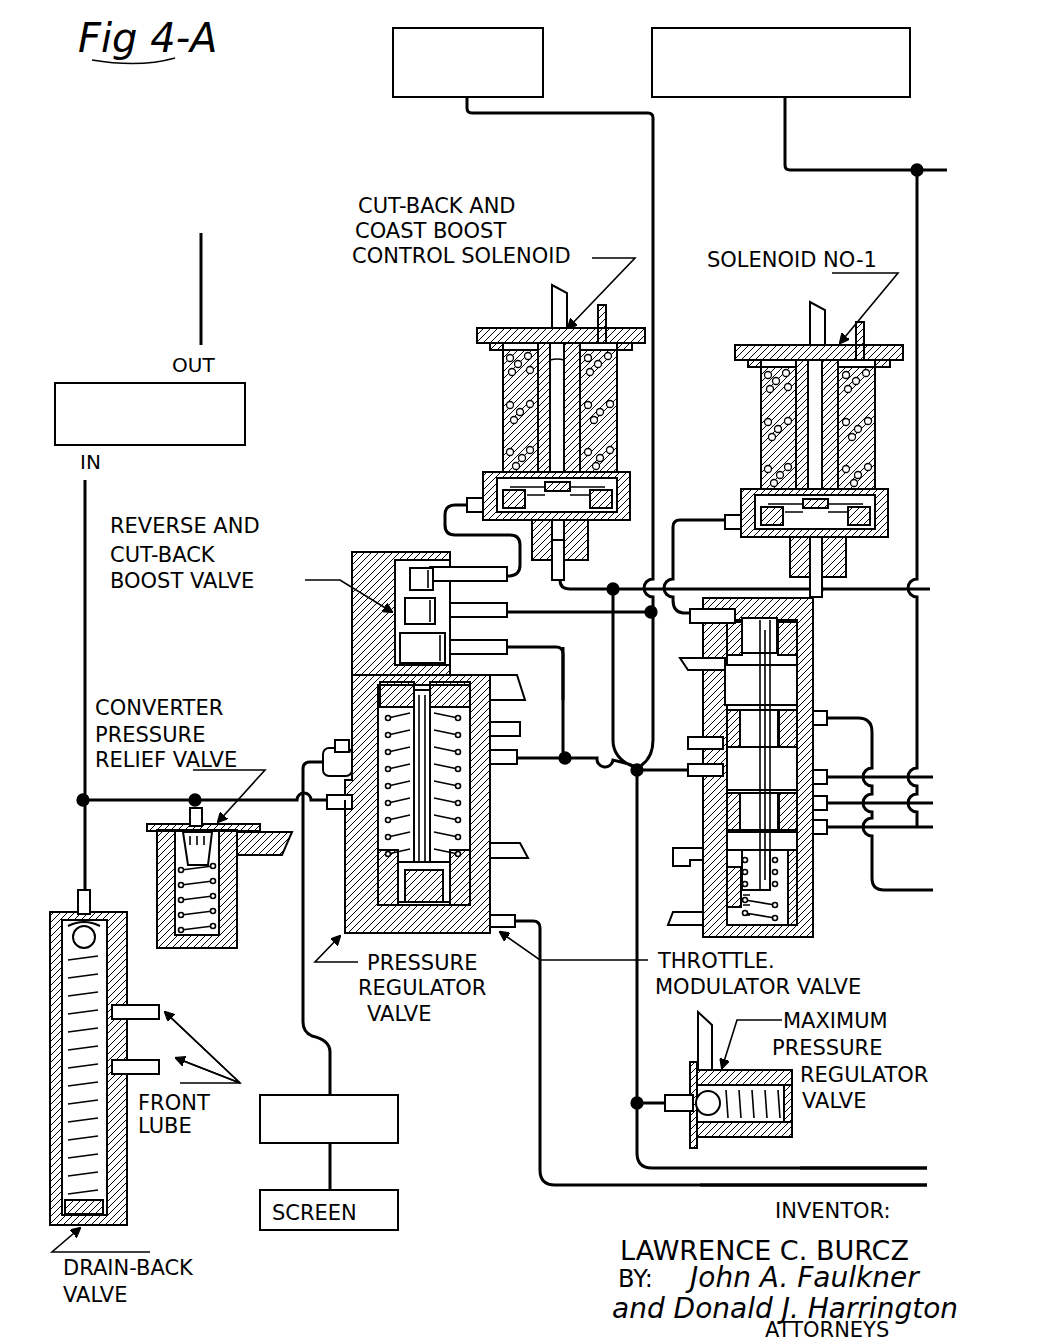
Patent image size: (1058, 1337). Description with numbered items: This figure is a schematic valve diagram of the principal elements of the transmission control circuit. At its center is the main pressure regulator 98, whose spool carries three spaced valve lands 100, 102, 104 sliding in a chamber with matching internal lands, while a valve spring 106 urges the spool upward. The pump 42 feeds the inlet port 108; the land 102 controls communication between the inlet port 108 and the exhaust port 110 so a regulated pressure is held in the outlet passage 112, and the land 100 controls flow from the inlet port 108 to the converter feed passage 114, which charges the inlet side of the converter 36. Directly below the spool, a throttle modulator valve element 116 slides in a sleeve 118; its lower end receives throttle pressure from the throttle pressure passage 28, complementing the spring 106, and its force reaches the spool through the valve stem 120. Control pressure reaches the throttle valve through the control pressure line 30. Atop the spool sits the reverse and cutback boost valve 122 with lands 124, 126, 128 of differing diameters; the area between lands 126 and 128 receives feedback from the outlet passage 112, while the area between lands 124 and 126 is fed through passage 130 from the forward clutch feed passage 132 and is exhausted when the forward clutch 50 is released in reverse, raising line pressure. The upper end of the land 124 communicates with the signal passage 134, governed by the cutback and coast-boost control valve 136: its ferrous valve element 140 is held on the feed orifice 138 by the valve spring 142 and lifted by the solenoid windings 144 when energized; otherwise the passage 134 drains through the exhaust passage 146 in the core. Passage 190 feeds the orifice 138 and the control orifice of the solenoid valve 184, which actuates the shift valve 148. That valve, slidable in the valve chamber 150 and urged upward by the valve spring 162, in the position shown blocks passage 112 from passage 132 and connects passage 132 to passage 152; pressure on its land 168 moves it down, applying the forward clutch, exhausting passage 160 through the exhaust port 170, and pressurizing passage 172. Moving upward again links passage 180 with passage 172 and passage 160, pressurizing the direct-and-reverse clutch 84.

The throttle pressure passage 28 is at (827, 1182).
The control pressure line 30 is at (905, 1168).
The converter 36 is at (123, 383).
The pump 42 is at (392, 1068).
The forward clutch 50 is at (393, 78).
The direct-and-reverse clutch 84 is at (652, 70).
The main pressure regulator 98 is at (368, 685).
The valve land 100 is at (432, 796).
The valve land 102 is at (494, 730).
The valve land 104 is at (488, 672).
The valve spring 106 is at (327, 760).
The inlet port 108 is at (340, 740).
The exhaust port 110 is at (500, 688).
The outlet passage 112 is at (524, 764).
The converter feed passage 114 is at (222, 788).
The throttle modulator valve element 116 is at (462, 884).
The sleeve 118 is at (345, 880).
The valve stem 120 is at (345, 855).
The reverse and cutback boost valve 122 is at (420, 568).
The valve land 124 is at (418, 582).
The valve land 126 is at (415, 616).
The valve land 128 is at (405, 650).
The passage 130 is at (556, 610).
The forward clutch feed passage 132 is at (653, 160).
The signal passage 134 is at (445, 510).
The cutback and coast-boost control valve 136 is at (498, 414).
The feed orifice 138 is at (560, 538).
The movable valve element 140 is at (540, 440).
The valve spring 142 is at (495, 490).
The solenoid windings 144 is at (545, 380).
The exhaust passage 146 is at (555, 362).
The shift valve 148 is at (745, 724).
The valve chamber 150 is at (703, 790).
The passage 152 is at (872, 858).
The passage 160 is at (940, 170).
The valve spring 162 is at (678, 915).
The valve land 168 is at (807, 651).
The exhaust port 170 is at (680, 853).
The passage 172 is at (846, 772).
The passage 180 is at (852, 830).
The solenoid valve 184 is at (760, 345).
The passage 190 is at (894, 592).